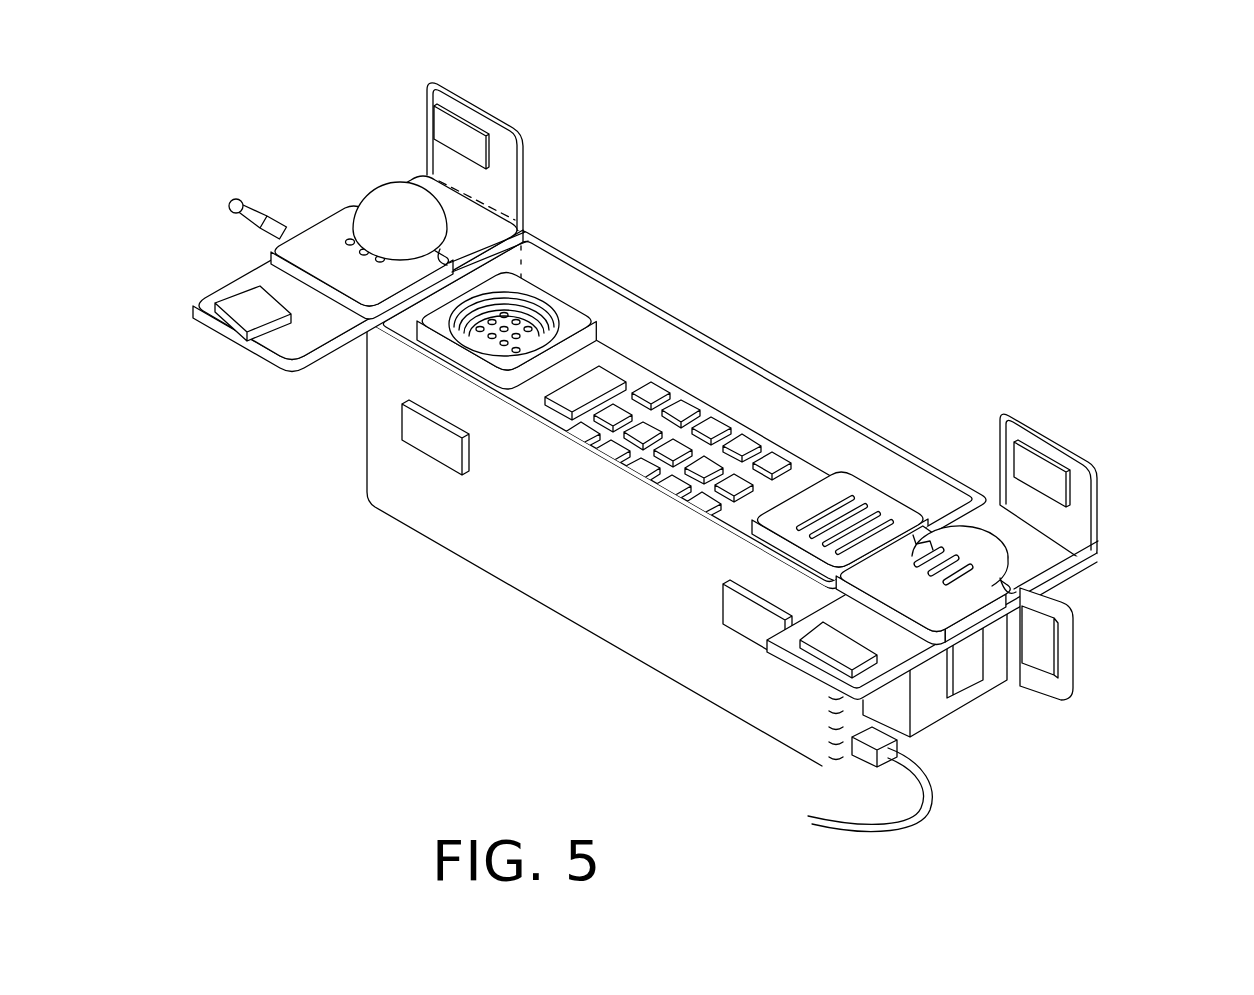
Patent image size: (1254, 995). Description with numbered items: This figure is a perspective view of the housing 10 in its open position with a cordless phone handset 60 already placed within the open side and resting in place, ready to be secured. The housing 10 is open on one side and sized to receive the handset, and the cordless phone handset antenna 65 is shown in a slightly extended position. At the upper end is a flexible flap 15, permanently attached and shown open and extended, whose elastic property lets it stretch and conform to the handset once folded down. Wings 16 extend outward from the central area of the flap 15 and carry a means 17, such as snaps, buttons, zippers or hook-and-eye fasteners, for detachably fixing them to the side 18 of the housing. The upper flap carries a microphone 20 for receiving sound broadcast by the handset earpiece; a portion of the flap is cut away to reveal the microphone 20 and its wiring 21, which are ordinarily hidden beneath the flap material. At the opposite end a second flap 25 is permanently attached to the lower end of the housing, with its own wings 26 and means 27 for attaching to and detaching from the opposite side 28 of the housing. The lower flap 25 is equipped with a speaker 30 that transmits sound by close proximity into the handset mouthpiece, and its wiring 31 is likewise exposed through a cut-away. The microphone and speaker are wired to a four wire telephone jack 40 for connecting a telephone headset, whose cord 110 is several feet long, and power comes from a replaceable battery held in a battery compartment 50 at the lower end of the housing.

The housing 10 is at (593, 598).
The flexible flap 15 is at (270, 253).
The wings 16 is at (503, 115).
The means for being detachably fixed 17 is at (445, 122).
The side of the housing 18 is at (427, 437).
The microphone 20 is at (380, 217).
The wiring 21 is at (518, 227).
The second flap 25 is at (1028, 540).
The wings 26 is at (1097, 498).
The means for attaching and detaching 27 is at (1038, 467).
The side of the housing 28 is at (738, 623).
The speaker 30 is at (995, 552).
The wiring 31 is at (1008, 588).
The four wire telephone jack 40 is at (887, 745).
The battery compartment 50 is at (948, 712).
The cordless phone handset 60 is at (602, 353).
The cordless phone handset antenna 65 is at (280, 217).
The cord 110 is at (913, 823).